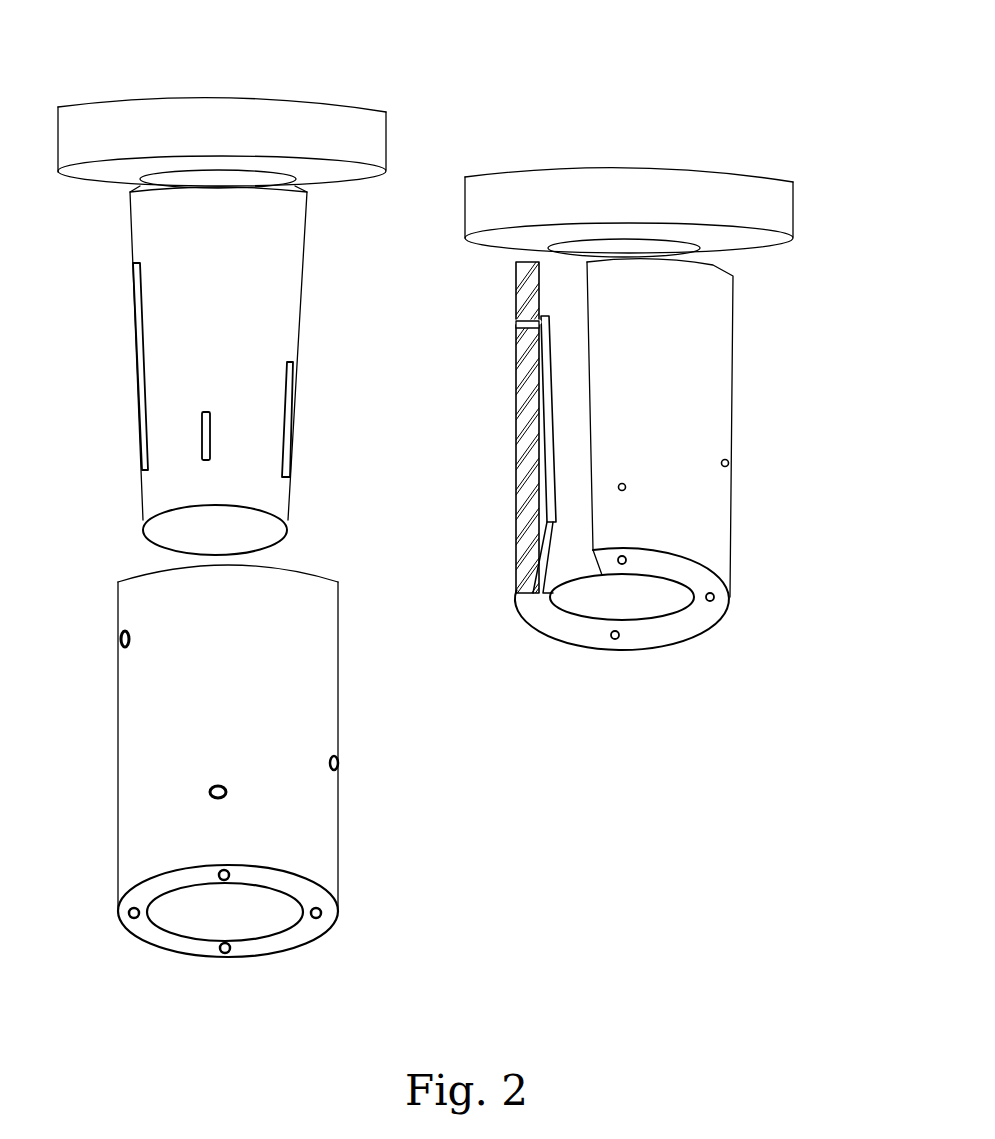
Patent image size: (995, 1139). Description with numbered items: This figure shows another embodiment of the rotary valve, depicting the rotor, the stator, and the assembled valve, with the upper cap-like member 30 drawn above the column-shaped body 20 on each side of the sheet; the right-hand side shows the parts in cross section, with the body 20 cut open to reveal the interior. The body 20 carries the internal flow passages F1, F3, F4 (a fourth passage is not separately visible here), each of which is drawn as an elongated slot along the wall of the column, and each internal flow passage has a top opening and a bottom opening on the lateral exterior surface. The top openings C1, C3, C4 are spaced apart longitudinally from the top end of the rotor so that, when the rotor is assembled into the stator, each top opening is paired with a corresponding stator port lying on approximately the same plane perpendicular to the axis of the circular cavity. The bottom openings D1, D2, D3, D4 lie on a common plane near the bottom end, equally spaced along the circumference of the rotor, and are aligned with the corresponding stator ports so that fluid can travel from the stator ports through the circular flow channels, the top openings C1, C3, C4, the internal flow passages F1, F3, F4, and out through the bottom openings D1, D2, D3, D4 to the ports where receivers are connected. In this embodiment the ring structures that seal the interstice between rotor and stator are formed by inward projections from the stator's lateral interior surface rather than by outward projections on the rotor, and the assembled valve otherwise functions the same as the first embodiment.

The cap 30 is at (212, 72).
The cylindrical body 20 is at (386, 721).
The internal flow passage F1 is at (140, 413).
The internal flow passage F3 is at (295, 402).
The internal flow passage F4 is at (203, 412).
The top opening C1 is at (120, 637).
The top opening C3 is at (338, 763).
The top opening C4 is at (215, 785).
The bottom opening D1 is at (130, 917).
The bottom opening D2 is at (224, 953).
The bottom opening D3 is at (314, 921).
The bottom opening D4 is at (224, 870).